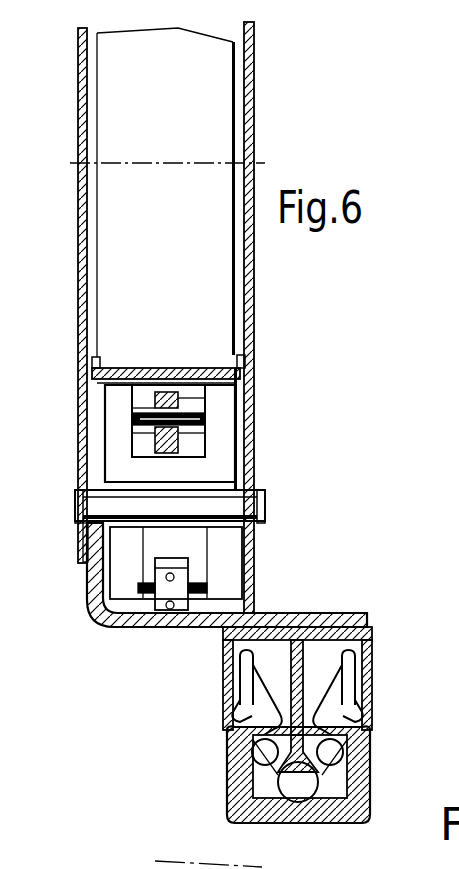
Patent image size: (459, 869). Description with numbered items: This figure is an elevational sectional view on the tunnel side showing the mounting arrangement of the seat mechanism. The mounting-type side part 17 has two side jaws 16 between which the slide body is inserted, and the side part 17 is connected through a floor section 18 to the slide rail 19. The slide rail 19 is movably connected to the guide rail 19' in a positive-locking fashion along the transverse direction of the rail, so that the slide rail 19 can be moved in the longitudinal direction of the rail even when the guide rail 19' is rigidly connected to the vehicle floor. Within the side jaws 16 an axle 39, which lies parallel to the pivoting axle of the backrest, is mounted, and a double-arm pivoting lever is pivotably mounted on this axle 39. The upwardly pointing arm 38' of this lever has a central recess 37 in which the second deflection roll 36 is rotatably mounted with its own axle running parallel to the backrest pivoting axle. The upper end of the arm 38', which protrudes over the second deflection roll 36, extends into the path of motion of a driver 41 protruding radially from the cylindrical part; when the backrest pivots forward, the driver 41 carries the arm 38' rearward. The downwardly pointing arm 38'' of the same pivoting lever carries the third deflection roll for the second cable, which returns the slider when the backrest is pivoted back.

The side jaws 16 is at (80, 222).
The mounting-type side part 17 is at (262, 84).
The floor section 18 is at (125, 621).
The slide rail 19 is at (334, 688).
The guide rail 19' is at (323, 774).
The second deflection roll 36 is at (195, 396).
The central recess 37 is at (195, 443).
The upwardly pointing arm 38' is at (136, 428).
The downwardly pointing arm 38'' is at (206, 568).
The axle 39 is at (255, 522).
The driver 41 is at (177, 368).